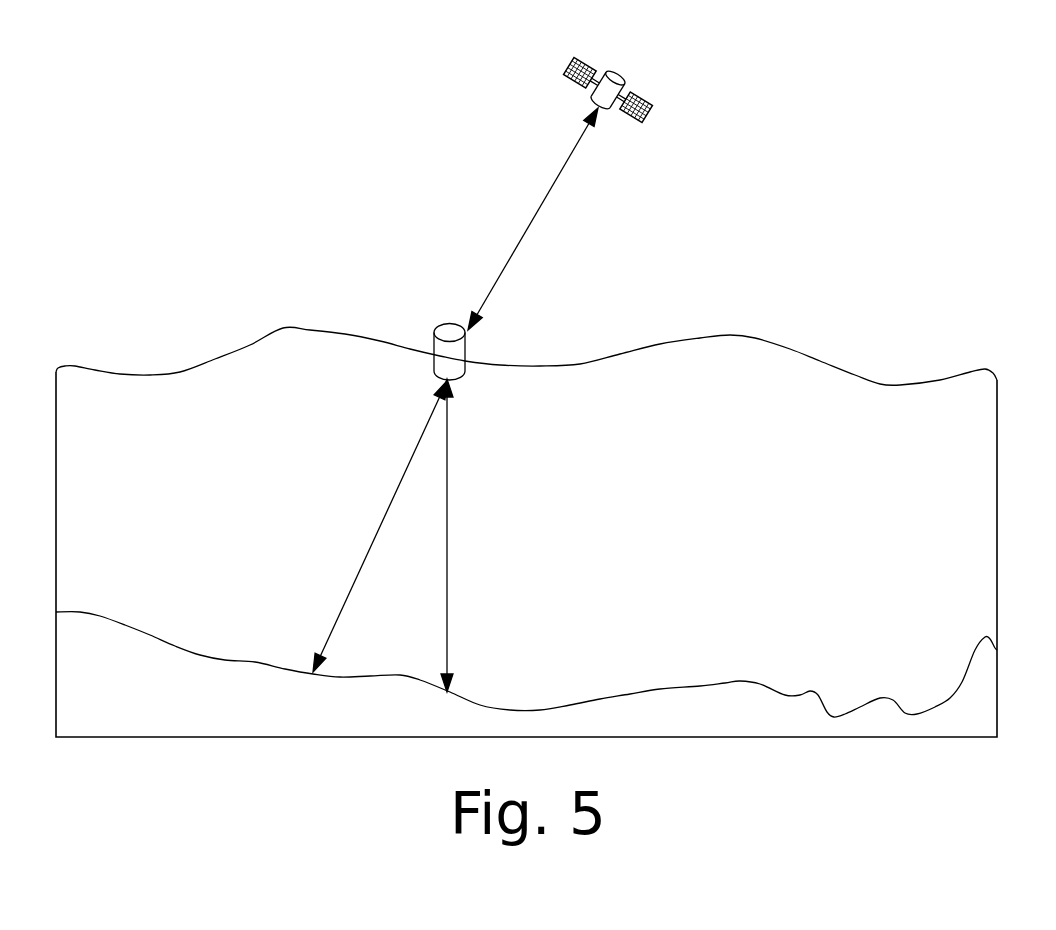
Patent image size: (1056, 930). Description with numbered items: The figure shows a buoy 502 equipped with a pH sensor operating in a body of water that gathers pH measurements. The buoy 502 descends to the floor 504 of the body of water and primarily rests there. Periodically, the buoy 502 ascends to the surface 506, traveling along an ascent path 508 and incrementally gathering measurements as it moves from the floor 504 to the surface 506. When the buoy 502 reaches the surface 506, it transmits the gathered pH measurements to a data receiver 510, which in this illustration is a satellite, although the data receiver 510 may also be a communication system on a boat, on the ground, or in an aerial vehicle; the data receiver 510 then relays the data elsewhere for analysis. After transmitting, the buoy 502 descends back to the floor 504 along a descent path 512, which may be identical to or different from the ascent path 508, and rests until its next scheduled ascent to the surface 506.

The buoy 502 is at (431, 366).
The floor 504 is at (192, 652).
The surface 506 is at (300, 326).
The ascent path 508 is at (448, 534).
The data receiver 510 is at (620, 76).
The descent path 512 is at (376, 532).